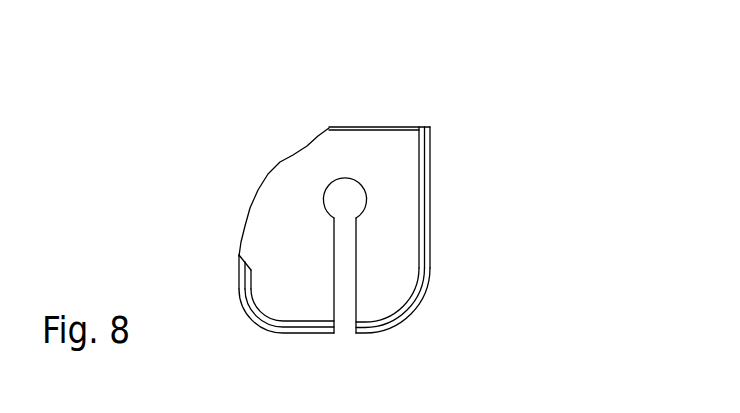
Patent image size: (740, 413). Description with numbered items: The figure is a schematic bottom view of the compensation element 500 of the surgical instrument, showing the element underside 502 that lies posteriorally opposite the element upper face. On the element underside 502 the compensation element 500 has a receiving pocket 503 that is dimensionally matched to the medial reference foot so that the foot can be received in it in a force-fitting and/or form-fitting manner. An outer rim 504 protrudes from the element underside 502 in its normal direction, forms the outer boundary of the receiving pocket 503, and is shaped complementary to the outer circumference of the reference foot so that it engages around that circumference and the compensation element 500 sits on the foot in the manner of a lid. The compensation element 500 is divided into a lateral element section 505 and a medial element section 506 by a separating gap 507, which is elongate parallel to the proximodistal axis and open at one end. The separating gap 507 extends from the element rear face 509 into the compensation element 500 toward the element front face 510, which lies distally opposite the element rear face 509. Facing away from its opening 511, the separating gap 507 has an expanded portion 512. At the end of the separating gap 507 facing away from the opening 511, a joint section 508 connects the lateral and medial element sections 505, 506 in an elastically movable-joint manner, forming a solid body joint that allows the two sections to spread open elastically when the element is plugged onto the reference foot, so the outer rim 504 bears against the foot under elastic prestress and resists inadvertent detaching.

The compensation element 500 is at (486, 142).
The element underside 502 is at (407, 200).
The receiving pocket 503 is at (310, 288).
The outer rim 504 is at (430, 260).
The lateral element section 505 is at (410, 215).
The medial element section 506 is at (257, 238).
The separating gap 507 is at (341, 275).
The joint section 508 is at (340, 155).
The element rear face 509 is at (373, 333).
The element front face 510 is at (392, 128).
The opening 511 is at (347, 325).
The expanded portion 512 is at (333, 198).